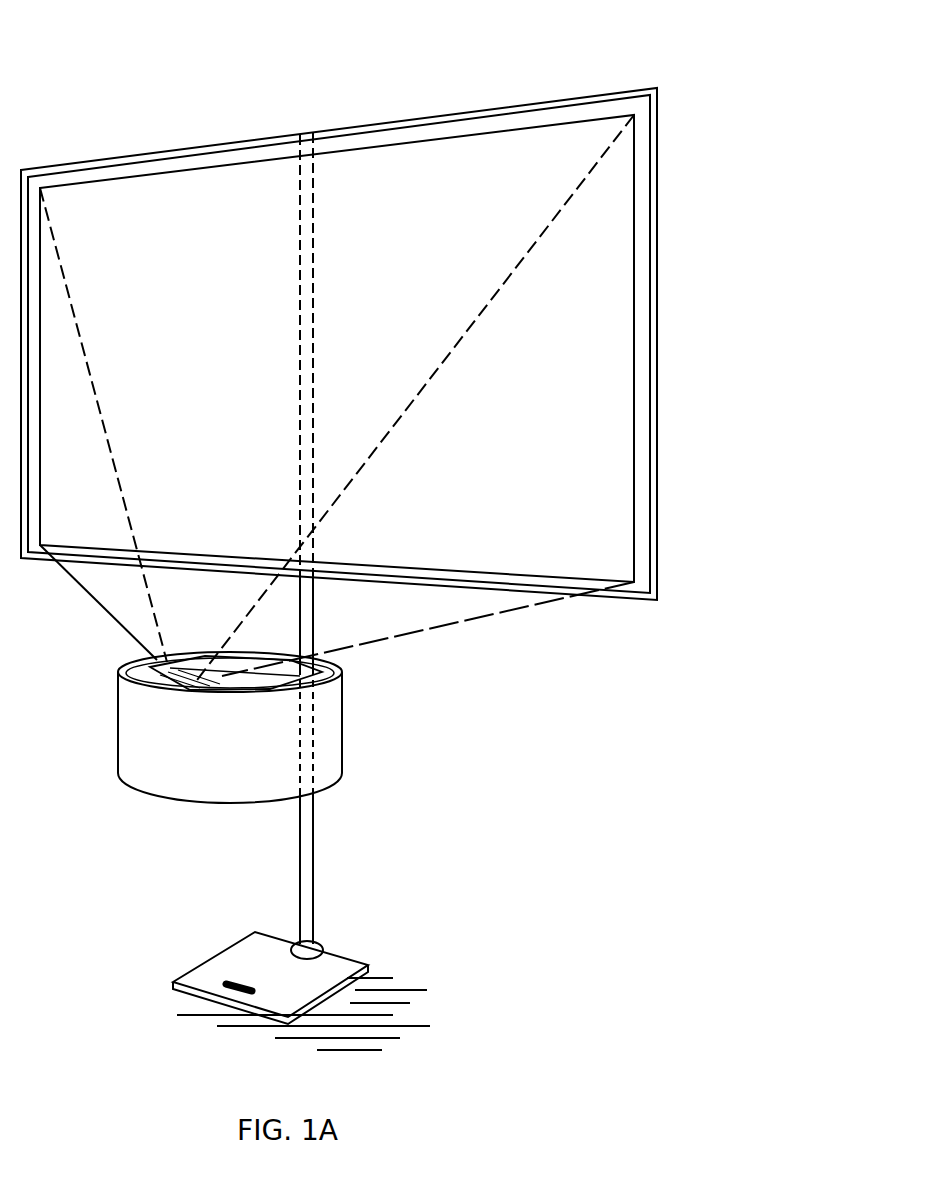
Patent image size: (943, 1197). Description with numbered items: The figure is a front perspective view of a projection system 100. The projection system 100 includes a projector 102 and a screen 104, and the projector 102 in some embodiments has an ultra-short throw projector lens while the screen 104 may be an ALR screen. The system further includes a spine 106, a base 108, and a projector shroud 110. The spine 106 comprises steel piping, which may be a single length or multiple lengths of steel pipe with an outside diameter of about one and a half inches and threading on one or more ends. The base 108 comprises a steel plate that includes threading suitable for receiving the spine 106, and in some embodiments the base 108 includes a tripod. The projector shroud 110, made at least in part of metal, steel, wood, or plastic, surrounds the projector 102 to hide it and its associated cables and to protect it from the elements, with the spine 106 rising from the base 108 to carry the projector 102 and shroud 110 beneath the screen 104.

The projection system 100 is at (158, 65).
The projector 102 is at (155, 662).
The screen 104 is at (658, 505).
The spine 106 is at (313, 828).
The base 108 is at (208, 952).
The projector shroud 110 is at (342, 737).